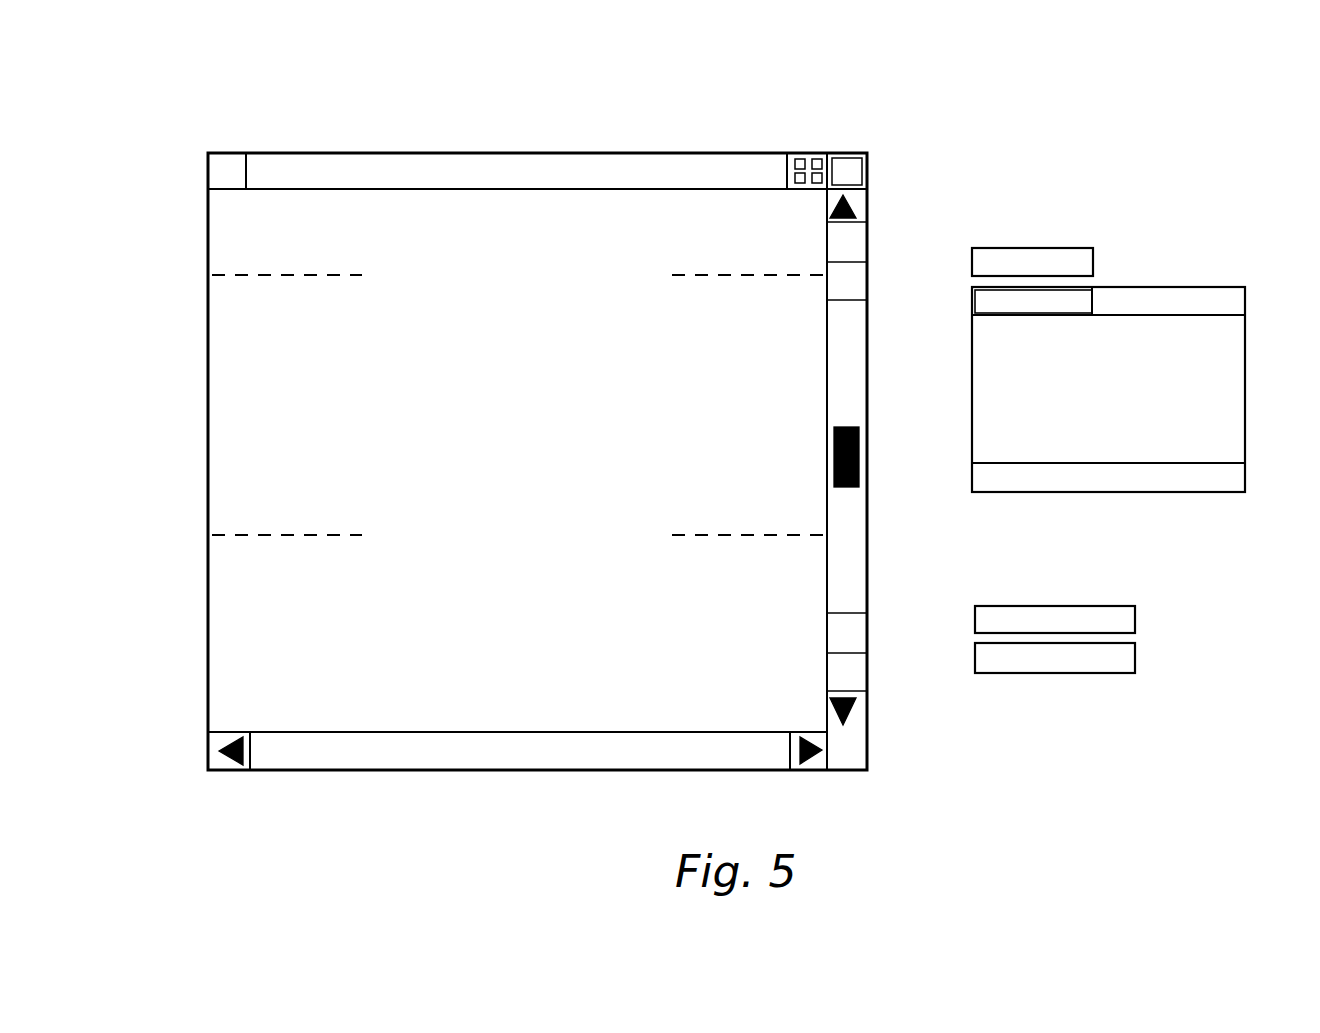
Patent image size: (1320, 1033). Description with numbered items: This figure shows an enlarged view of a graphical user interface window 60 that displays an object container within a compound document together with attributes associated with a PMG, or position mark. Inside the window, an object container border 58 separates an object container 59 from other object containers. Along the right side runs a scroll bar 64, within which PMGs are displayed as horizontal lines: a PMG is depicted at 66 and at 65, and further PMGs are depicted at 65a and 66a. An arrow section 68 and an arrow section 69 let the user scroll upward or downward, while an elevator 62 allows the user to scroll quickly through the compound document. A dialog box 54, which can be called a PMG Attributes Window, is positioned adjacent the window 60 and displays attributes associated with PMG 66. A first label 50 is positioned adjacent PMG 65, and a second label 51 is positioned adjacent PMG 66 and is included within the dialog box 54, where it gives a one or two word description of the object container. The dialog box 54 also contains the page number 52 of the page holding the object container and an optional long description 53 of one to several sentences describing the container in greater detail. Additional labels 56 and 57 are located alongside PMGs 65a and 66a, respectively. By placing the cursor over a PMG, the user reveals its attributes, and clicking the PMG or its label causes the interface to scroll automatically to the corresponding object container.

The first label 50 is at (1082, 248).
The second label 51 is at (975, 295).
The page number 52 is at (1232, 287).
The long description 53 is at (1232, 402).
The dialog box 54 is at (1086, 520).
The additional label 56 is at (1118, 607).
The additional label 57 is at (1120, 665).
The object container border 58 is at (232, 276).
The object container 59 is at (236, 418).
The window 60 is at (273, 92).
The elevator 62 is at (858, 479).
The scroll bar 64 is at (860, 551).
The PMG 65 is at (846, 259).
The PMG 65a is at (840, 613).
The PMG 66 is at (836, 300).
The PMG 66a is at (858, 654).
The arrow section 68 is at (858, 197).
The arrow section 69 is at (858, 714).